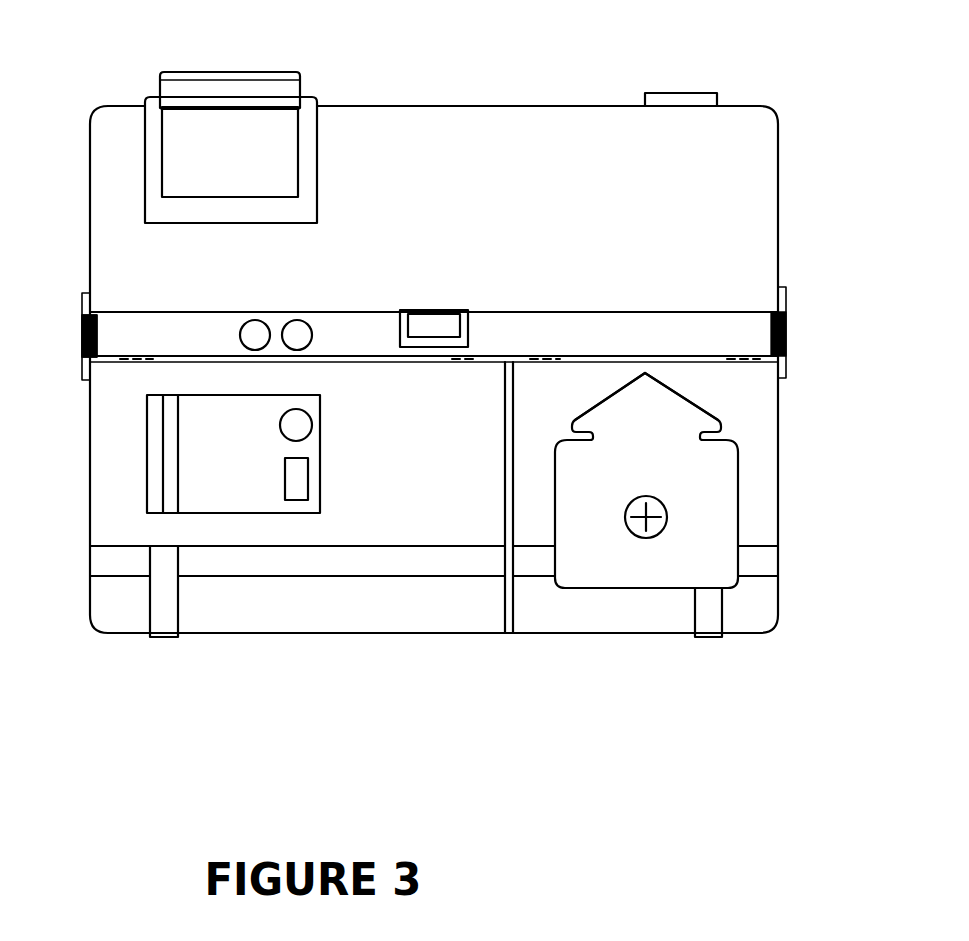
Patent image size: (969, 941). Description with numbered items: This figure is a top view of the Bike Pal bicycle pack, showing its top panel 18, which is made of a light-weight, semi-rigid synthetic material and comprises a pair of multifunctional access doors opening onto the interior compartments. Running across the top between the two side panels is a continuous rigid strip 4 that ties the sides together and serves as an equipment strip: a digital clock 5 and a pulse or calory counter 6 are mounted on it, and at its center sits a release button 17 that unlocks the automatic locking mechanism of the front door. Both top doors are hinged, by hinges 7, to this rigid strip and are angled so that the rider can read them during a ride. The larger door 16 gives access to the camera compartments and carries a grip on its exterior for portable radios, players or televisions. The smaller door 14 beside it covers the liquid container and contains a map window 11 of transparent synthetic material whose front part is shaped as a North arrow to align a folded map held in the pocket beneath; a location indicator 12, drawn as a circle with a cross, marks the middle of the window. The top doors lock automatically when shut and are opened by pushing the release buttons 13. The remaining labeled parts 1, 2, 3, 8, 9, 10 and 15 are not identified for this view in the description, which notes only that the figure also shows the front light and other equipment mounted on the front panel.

The handle 1 is at (250, 100).
The housing 2 is at (758, 170).
The push button 3 is at (690, 93).
The rigid strip 4 is at (158, 323).
The digital clock 5 is at (252, 323).
The pulse or calory counter 6 is at (300, 328).
The hinge 7 is at (470, 360).
The latch 8 is at (83, 320).
The control module 9 is at (275, 442).
The battery compartment 10 is at (587, 478).
The map window 11 is at (680, 422).
The location indicator 12 is at (657, 533).
The release buttons 13 is at (168, 612).
The smaller door 14 is at (552, 587).
The lower compartment 15 is at (350, 553).
The larger door 16 is at (235, 608).
The release button 17 is at (427, 320).
The top panel 18 is at (497, 216).